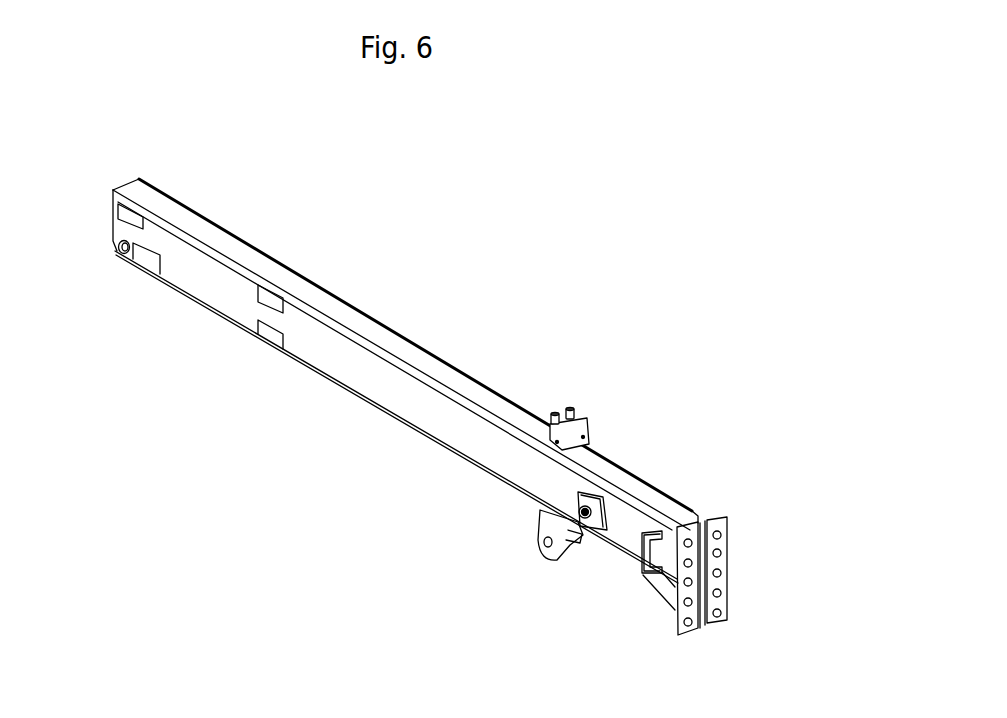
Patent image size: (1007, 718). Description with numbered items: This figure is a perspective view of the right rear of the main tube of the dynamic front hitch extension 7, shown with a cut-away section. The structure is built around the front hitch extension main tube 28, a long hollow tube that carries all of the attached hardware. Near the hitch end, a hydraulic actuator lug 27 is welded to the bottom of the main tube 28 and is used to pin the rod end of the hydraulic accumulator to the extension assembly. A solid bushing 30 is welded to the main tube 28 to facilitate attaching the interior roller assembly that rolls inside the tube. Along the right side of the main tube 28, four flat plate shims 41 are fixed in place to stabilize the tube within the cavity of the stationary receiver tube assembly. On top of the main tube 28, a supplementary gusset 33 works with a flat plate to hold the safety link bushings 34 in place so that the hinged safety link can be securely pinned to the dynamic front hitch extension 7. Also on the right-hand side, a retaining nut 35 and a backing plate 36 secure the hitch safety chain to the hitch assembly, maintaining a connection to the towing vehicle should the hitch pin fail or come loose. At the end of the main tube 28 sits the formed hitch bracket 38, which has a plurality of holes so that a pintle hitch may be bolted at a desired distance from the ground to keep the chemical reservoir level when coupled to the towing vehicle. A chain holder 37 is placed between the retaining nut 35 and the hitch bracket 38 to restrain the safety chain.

The dynamic front hitch extension 7 is at (347, 389).
The front hitch extension main tube 28 is at (417, 346).
The solid bushing 30 is at (120, 256).
The flat plate shims 41 is at (282, 298).
The supplementary gusset 33 is at (590, 430).
The safety link bushings 34 is at (559, 412).
The retaining nut 35 is at (567, 555).
The hydraulic actuator lug 27 is at (537, 553).
The backing plate 36 is at (600, 533).
The chain holder 37 is at (667, 526).
The formed hitch bracket 38 is at (728, 564).